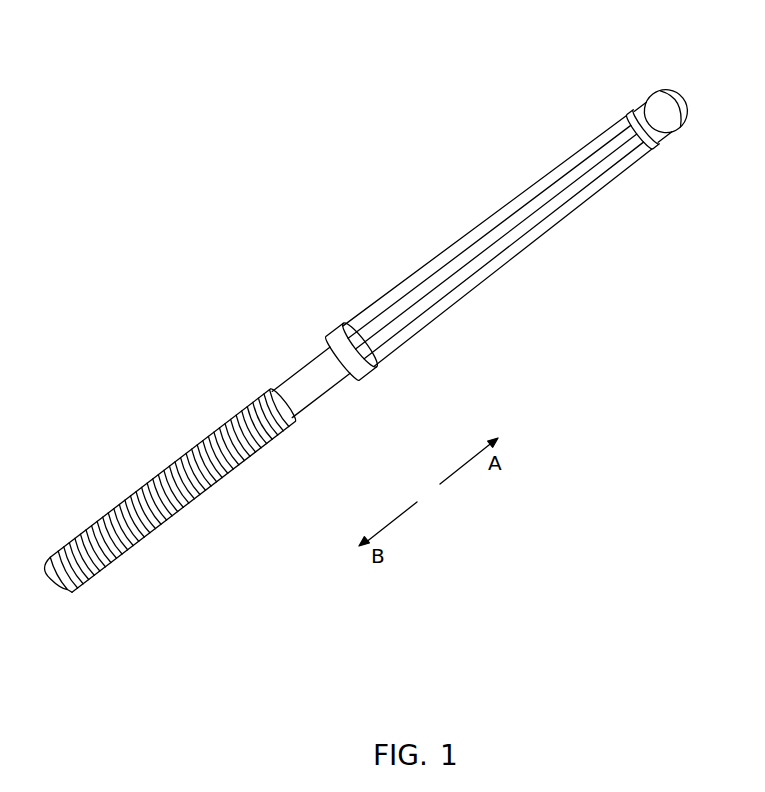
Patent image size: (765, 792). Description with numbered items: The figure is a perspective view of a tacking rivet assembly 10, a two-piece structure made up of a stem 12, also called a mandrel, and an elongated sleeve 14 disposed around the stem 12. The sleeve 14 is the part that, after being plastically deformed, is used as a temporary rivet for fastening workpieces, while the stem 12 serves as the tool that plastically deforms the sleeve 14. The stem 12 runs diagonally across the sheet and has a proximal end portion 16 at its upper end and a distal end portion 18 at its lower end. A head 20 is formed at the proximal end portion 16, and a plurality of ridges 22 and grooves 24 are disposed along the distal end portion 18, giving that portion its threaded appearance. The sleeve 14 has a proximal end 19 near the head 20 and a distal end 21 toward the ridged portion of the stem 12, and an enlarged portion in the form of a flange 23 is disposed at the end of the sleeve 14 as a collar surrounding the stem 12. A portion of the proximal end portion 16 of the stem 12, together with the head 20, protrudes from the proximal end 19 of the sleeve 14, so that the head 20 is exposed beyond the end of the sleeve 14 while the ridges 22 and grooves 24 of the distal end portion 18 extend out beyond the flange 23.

The tacking rivet assembly 10 is at (354, 222).
The stem 12 is at (303, 382).
The elongated sleeve 14 is at (410, 293).
The proximal end portion 16 is at (643, 100).
The distal end portion 18 is at (139, 482).
The proximal end 19 is at (655, 161).
The head 20 is at (673, 126).
The distal end 21 is at (406, 358).
The ridges 22 is at (73, 533).
The flange 23 is at (355, 367).
The grooves 24 is at (221, 476).